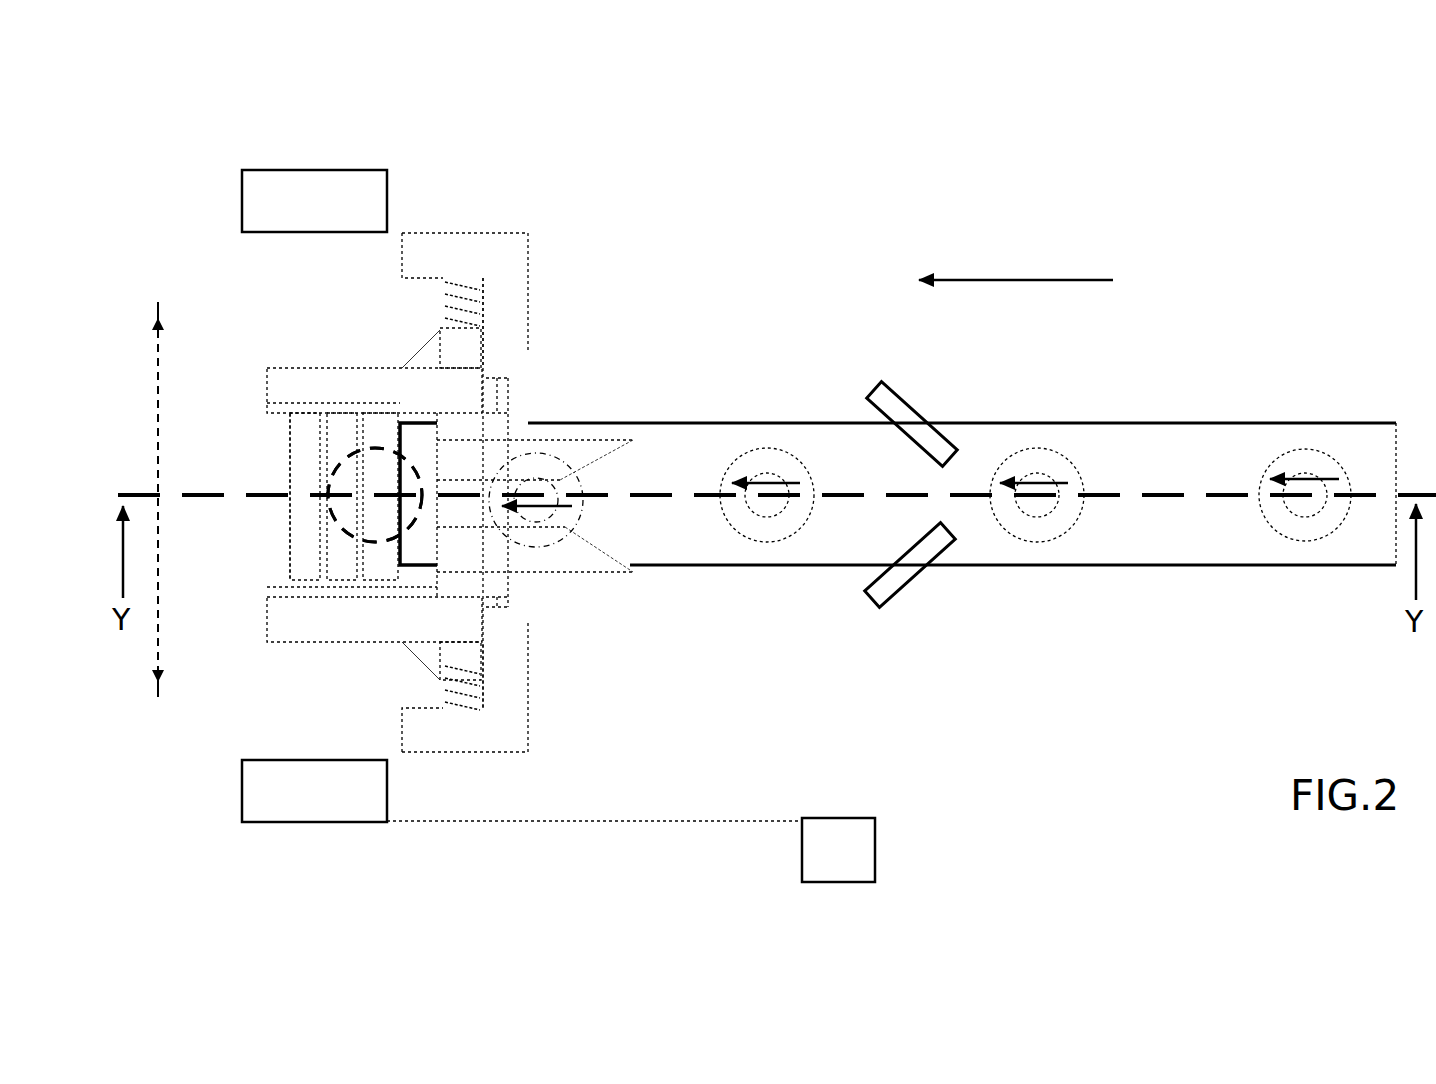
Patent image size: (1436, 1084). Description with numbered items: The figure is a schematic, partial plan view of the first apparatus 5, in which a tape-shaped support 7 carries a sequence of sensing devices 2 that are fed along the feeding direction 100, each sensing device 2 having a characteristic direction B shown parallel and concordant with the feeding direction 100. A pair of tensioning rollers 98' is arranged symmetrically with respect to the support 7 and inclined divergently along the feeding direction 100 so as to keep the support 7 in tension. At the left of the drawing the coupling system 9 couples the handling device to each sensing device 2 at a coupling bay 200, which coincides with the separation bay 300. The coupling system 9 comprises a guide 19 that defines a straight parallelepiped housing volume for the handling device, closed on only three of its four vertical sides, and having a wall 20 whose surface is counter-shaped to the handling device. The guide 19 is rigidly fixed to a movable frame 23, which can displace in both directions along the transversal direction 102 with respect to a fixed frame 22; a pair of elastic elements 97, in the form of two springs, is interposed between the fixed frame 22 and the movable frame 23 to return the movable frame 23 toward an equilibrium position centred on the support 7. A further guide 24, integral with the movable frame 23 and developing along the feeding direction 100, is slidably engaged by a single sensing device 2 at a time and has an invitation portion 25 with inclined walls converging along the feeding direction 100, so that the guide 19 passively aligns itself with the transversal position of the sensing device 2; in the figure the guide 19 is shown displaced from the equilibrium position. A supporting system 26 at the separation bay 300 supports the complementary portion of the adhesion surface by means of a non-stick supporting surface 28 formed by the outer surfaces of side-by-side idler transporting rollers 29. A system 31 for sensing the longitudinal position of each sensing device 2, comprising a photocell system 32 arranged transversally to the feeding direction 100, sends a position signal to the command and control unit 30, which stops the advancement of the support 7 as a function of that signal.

The sensing device 2 is at (1069, 452).
The first apparatus 5 is at (1308, 252).
The support 7 is at (1217, 548).
The coupling system 9 is at (550, 176).
The guide 19 is at (280, 366).
The wall 20 is at (468, 585).
The fixed frame 22 is at (513, 255).
The movable frame 23 is at (468, 660).
The further guide 24 is at (580, 563).
The invitation portion 25 is at (596, 453).
The supporting system 26 is at (280, 572).
The supporting surface 28 is at (290, 537).
The idler transporting rollers 29 is at (293, 430).
The command and control unit 30 is at (838, 850).
The system for sensing 31 is at (375, 840).
The photocell system 32 is at (314, 496).
The elastic elements 97 is at (463, 271).
The tensioning rollers 98' is at (912, 503).
The feeding direction 100 is at (1097, 278).
The transversal direction 102 is at (158, 357).
The coupling bay 200 is at (337, 562).
The separation bay 300 is at (375, 495).